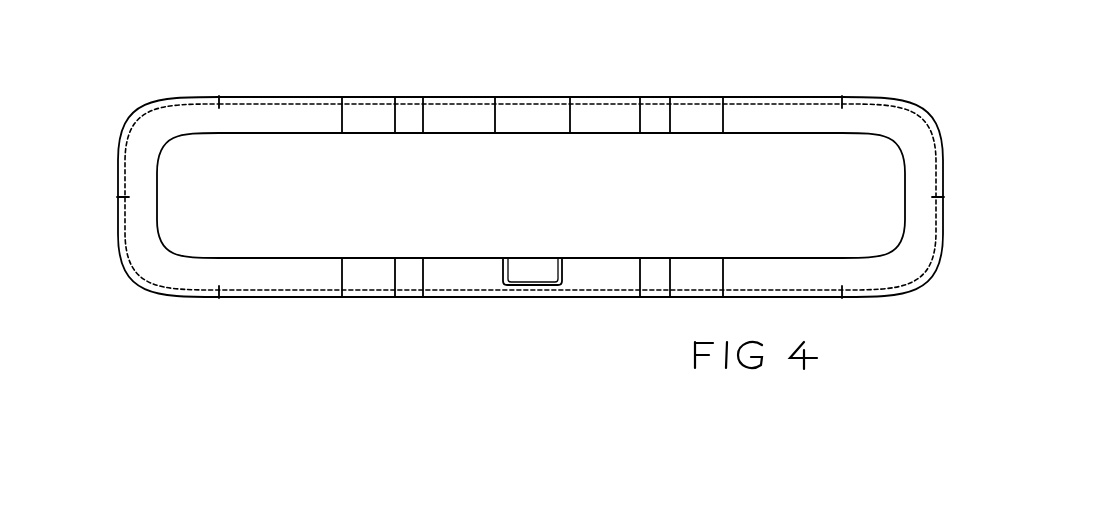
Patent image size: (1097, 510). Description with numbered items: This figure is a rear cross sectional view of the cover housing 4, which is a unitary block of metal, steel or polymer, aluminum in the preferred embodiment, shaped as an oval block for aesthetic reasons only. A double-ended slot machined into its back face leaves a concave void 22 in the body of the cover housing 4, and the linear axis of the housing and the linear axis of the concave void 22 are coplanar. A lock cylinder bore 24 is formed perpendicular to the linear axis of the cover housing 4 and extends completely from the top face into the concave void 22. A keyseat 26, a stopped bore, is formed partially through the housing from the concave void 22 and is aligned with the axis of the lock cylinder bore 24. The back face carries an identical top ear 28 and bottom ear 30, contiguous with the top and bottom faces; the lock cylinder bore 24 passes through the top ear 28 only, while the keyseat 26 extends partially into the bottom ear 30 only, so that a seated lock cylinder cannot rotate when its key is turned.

The cover housing 4 is at (918, 140).
The concave void 22 is at (868, 205).
The lock cylinder bore 24 is at (533, 118).
The keyseat 26 is at (533, 273).
The top ear 28 is at (602, 120).
The bottom ear 30 is at (593, 268).